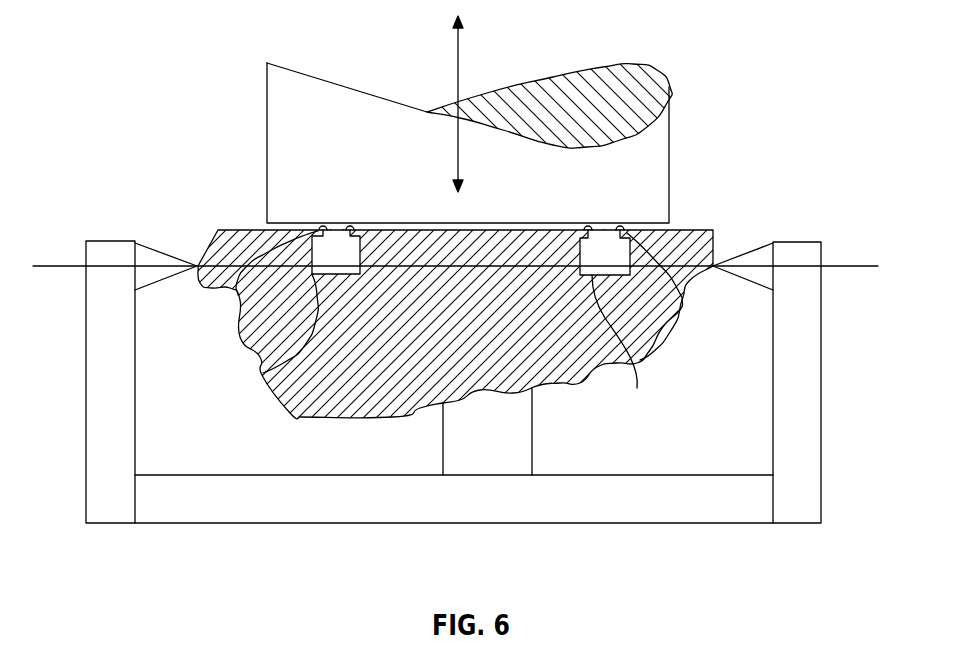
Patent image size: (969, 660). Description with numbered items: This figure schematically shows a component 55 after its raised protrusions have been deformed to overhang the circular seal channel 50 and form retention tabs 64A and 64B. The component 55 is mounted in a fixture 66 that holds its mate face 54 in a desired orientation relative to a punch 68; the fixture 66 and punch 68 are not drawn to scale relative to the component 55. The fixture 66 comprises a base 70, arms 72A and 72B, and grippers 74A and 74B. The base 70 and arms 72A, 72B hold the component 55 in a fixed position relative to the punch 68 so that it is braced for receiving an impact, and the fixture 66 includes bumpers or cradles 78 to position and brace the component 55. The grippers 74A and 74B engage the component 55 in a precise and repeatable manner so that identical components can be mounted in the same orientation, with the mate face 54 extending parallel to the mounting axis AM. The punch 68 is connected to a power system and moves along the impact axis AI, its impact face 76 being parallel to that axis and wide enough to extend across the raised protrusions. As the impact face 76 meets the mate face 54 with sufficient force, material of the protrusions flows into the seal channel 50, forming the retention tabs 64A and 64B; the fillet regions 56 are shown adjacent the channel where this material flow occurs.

The circular seal channel 50 is at (337, 278).
The mate face 54 is at (240, 228).
The component 55 is at (663, 311).
The fillet / transition surface 56 is at (263, 372).
The retention tab 64A is at (227, 288).
The retention tab 64B is at (588, 231).
The fixture 66 is at (457, 408).
The punch 68 is at (668, 72).
The base 70 is at (353, 503).
The arm 72A is at (808, 302).
The arm 72B is at (100, 432).
The gripper 74A is at (750, 255).
The gripper 74B is at (151, 258).
The impact face 76 is at (349, 228).
The bumpers or cradles 78 is at (510, 455).
The impact axis AI is at (455, 52).
The mounting axis AM is at (845, 263).